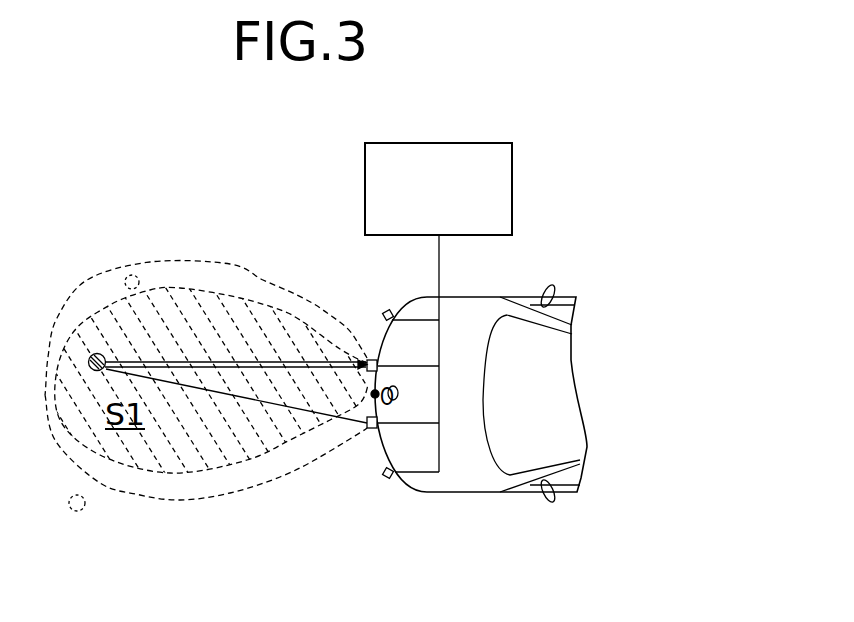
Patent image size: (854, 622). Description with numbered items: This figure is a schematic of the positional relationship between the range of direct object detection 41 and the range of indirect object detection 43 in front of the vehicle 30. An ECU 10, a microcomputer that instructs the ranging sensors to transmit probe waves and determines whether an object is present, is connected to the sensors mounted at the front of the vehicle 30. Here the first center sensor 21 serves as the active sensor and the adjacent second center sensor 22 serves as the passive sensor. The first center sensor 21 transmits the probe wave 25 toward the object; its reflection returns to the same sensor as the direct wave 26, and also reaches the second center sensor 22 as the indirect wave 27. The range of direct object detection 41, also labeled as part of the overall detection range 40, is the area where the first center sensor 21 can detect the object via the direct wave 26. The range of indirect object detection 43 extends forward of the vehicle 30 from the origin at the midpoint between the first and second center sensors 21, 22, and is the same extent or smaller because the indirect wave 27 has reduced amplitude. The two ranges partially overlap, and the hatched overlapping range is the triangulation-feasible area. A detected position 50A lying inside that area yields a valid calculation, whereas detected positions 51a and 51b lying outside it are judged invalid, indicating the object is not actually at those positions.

The ECU 10 is at (468, 143).
The first center sensor 21 is at (366, 358).
The second center sensor 22 is at (368, 430).
The probe wave 25 is at (291, 367).
The direct wave 26 is at (231, 362).
The indirect wave 27 is at (213, 390).
The vehicle 30 is at (462, 492).
The detection region 40 is at (206, 298).
The range of direct object detection 41 is at (231, 263).
The range of indirect object detection 43 is at (177, 503).
The detected position 50A is at (91, 355).
The detected position 51a is at (132, 275).
The detected position 51b is at (72, 511).